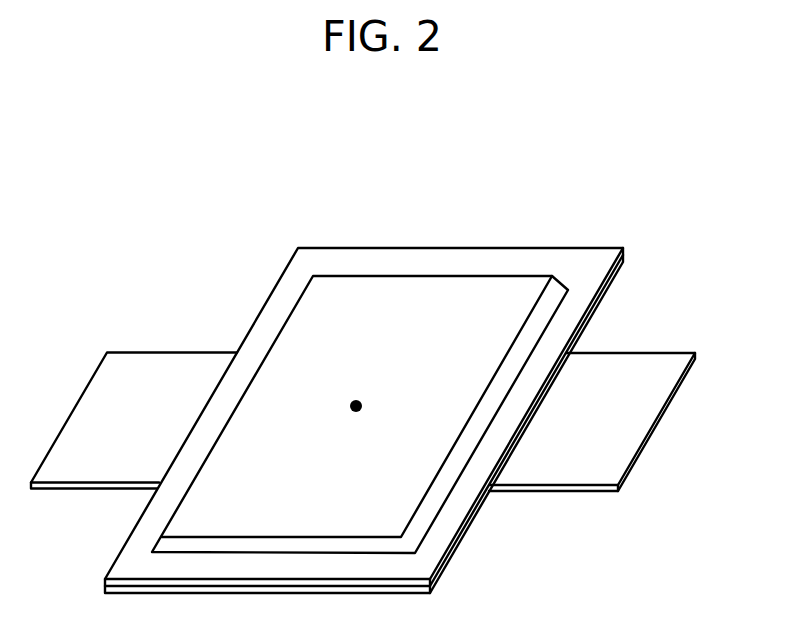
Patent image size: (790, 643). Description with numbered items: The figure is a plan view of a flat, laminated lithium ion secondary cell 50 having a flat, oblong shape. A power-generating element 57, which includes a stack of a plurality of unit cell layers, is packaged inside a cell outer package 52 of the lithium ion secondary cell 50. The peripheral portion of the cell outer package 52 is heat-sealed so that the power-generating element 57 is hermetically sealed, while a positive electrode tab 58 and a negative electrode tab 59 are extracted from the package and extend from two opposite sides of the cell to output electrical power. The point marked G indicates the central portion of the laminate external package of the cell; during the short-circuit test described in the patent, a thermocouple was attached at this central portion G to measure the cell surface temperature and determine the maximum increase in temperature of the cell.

The lithium ion secondary cell 50 is at (478, 108).
The cell outer package 52 is at (443, 535).
The power-generating element 57 is at (403, 288).
The positive electrode tab 58 is at (155, 360).
The negative electrode tab 59 is at (652, 360).
The central portion of the laminate external package G is at (360, 398).